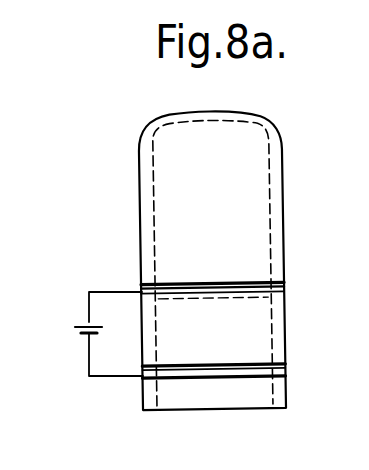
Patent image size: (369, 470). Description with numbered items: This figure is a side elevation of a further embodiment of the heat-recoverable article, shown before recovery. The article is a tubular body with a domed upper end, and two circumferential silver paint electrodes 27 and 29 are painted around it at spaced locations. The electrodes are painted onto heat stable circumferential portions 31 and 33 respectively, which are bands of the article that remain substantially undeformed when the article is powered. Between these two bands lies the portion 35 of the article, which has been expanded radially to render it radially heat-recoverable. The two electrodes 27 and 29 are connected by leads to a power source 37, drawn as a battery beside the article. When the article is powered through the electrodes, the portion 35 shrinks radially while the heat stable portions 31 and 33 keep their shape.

The silver paint electrode 27 is at (282, 289).
The silver paint electrode 29 is at (283, 374).
The heat stable circumferential portion 31 is at (276, 284).
The heat stable circumferential portion 33 is at (280, 368).
The radially heat-recoverable portion 35 is at (285, 330).
The power source 37 is at (85, 325).